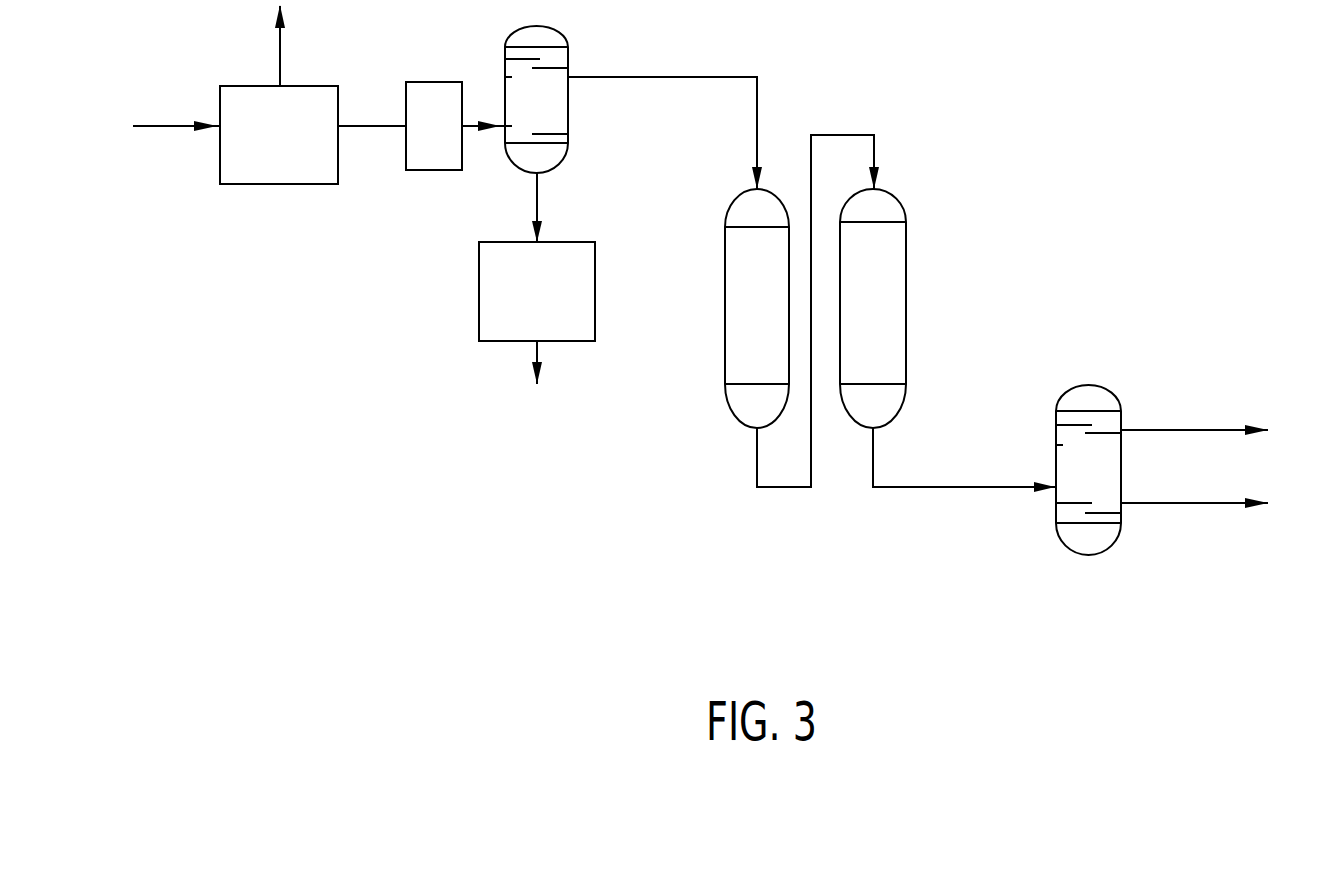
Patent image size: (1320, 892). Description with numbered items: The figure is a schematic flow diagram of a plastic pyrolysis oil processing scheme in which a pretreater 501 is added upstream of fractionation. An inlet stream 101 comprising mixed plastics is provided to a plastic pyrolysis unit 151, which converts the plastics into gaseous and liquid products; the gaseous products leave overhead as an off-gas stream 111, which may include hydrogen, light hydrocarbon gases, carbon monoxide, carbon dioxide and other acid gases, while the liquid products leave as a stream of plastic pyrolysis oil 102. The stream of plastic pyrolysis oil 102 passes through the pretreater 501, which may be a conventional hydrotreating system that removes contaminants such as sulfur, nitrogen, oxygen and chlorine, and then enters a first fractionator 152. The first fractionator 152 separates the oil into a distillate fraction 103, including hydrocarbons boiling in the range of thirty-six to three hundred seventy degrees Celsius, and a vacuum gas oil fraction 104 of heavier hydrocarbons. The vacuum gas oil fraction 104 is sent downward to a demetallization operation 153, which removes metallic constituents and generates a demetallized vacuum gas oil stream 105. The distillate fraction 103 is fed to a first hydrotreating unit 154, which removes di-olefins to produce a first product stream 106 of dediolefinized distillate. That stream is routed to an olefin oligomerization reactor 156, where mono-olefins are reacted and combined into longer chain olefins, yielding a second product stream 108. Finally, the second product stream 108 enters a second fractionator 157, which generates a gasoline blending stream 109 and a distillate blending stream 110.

The inlet stream 101 is at (172, 125).
The stream of plastic pyrolysis oil 102 is at (377, 125).
The distillate fraction 103 is at (657, 75).
The vacuum gas oil fraction 104 is at (533, 212).
The demetallized vacuum gas oil stream 105 is at (533, 350).
The first product stream 106 is at (785, 490).
The second product stream 108 is at (962, 490).
The gasoline blending stream 109 is at (1187, 428).
The distillate blending stream 110 is at (1187, 505).
The off-gas stream 111 is at (280, 60).
The plastic pyrolysis unit 151 is at (294, 152).
The first fractionator 152 is at (554, 115).
The demetallization operation 153 is at (553, 305).
The first hydrotreating unit 154 is at (774, 323).
The olefin oligomerization reactor 156 is at (891, 323).
The second fractionator 157 is at (1104, 485).
The pretreater 501 is at (451, 142).